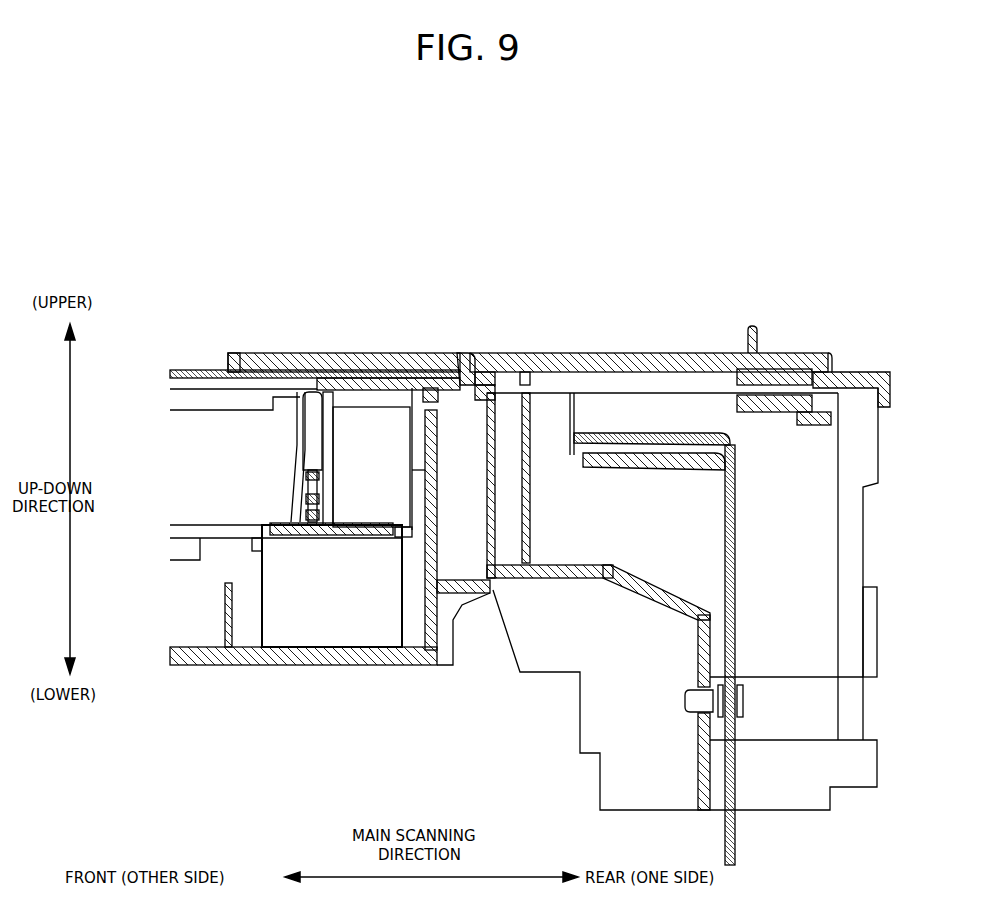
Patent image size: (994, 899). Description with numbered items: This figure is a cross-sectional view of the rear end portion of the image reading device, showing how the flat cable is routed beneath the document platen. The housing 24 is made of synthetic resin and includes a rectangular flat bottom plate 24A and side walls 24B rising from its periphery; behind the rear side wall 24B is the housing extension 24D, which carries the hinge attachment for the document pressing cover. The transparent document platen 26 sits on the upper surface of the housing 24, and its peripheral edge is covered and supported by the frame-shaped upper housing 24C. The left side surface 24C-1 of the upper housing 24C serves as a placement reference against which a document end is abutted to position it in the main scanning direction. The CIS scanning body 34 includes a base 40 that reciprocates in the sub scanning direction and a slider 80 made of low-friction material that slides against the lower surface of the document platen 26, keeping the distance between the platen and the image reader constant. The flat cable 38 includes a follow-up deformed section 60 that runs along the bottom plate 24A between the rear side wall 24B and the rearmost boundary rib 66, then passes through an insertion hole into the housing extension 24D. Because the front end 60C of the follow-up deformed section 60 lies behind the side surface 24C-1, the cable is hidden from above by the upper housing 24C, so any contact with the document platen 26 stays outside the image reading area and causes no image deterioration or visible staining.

The housing 24 is at (688, 335).
The bottom plate 24A is at (180, 662).
The side wall 24B is at (432, 510).
The upper housing 24C is at (392, 355).
The side surface 24C-1 is at (229, 356).
The housing extension 24D is at (820, 557).
The document platen 26 is at (197, 372).
The CIS scanning body 34 is at (175, 574).
The flat cable 38 is at (260, 612).
The base 40 is at (180, 490).
The follow-up deformed section 60 is at (360, 625).
The front end 60C is at (263, 593).
The boundary rib 66 is at (232, 618).
The slider 80 is at (310, 390).